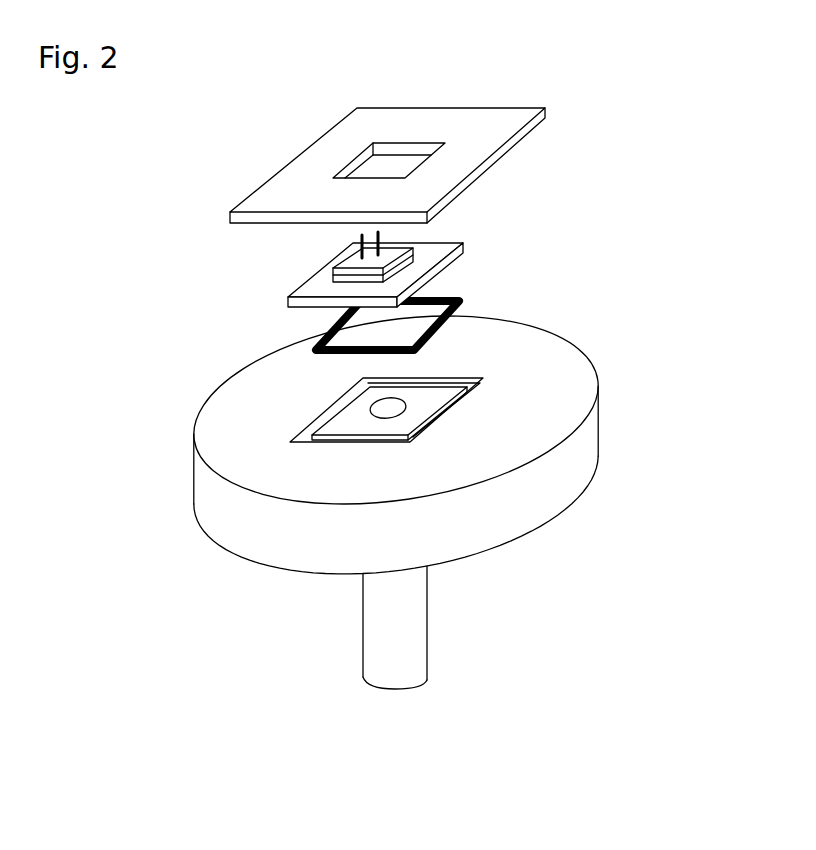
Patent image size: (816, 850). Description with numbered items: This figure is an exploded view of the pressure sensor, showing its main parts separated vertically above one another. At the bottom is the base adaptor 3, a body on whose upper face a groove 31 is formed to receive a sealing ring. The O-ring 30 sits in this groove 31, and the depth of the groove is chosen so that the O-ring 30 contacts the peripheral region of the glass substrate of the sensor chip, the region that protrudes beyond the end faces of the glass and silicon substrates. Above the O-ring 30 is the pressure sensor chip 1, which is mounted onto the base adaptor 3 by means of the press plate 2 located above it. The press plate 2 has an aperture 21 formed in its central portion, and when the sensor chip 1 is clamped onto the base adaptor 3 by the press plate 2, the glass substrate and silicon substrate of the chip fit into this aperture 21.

The pressure sensor chip 1 is at (477, 247).
The press plate 2 is at (437, 134).
The aperture 21 is at (393, 143).
The base adaptor 3 is at (444, 490).
The O-ring 30 is at (467, 300).
The groove 31 is at (413, 420).